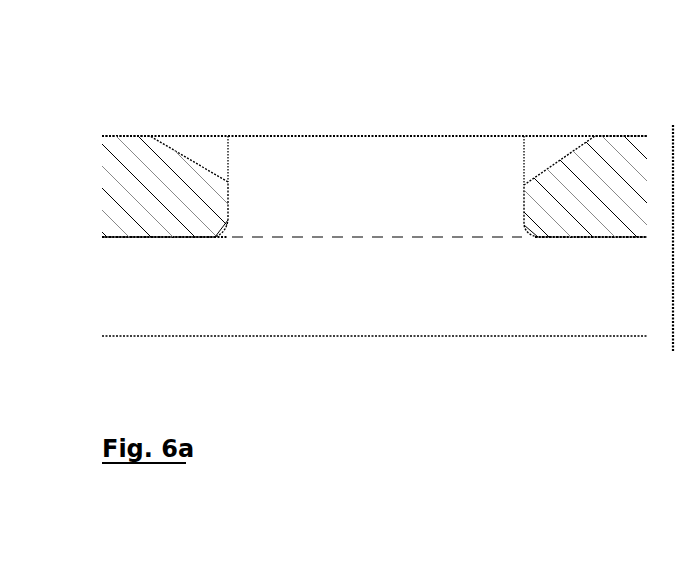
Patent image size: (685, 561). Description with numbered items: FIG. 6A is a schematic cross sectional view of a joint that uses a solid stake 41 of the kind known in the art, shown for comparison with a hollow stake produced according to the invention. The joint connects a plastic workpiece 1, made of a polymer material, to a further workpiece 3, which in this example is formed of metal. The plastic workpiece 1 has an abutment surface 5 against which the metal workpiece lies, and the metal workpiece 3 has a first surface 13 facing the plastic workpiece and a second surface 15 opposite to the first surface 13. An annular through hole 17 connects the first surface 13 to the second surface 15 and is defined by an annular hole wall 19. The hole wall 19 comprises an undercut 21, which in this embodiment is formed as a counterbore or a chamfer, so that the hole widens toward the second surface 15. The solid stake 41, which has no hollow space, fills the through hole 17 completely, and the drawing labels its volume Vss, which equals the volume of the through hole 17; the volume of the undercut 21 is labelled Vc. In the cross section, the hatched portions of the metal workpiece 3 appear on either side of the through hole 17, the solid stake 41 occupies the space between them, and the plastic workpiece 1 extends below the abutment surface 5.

The plastic workpiece 1 is at (150, 297).
The further workpiece 3 is at (132, 182).
The abutment surface 5 is at (616, 237).
The first surface 13 is at (560, 237).
The second surface 15 is at (628, 136).
The through hole 17 is at (228, 203).
The hole wall 19 is at (525, 208).
The undercut 21 is at (555, 148).
The solid stake 41 is at (437, 192).